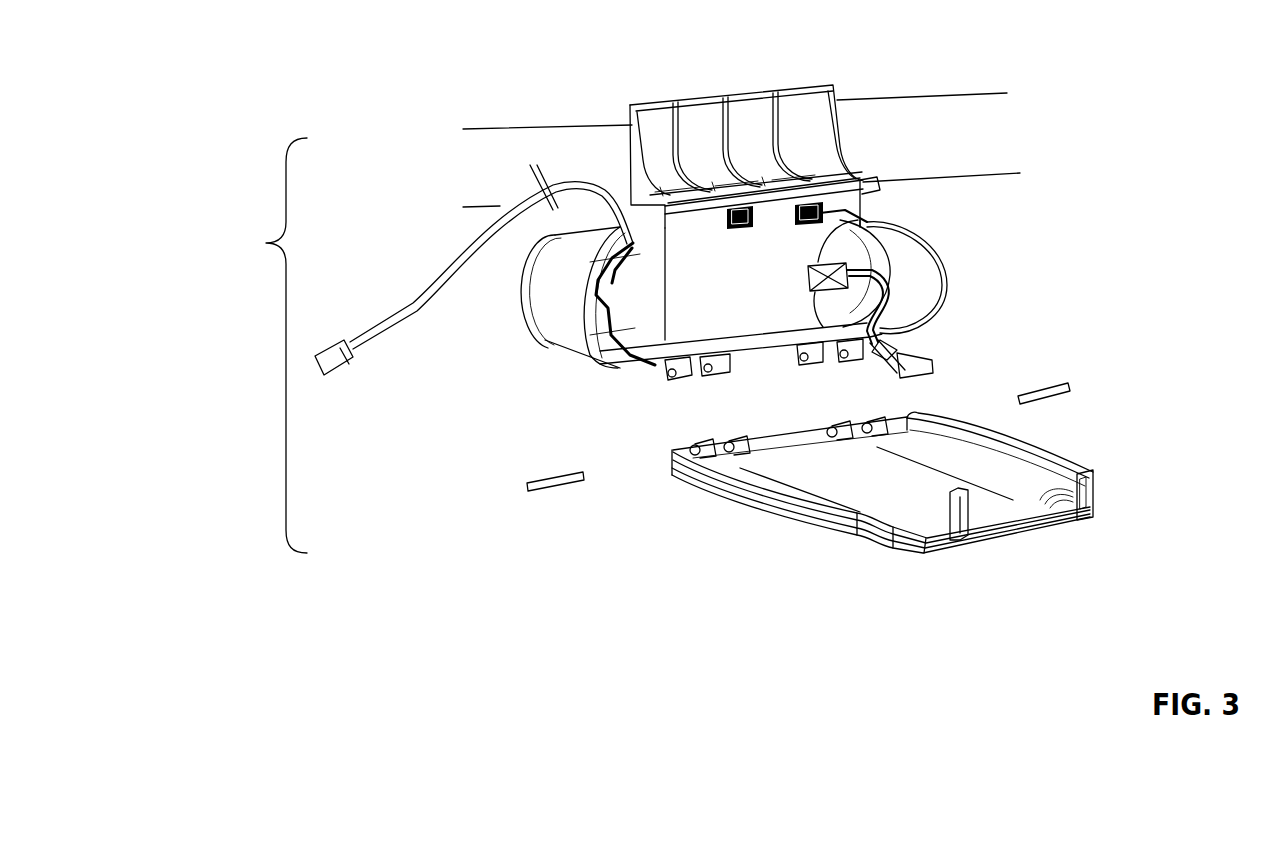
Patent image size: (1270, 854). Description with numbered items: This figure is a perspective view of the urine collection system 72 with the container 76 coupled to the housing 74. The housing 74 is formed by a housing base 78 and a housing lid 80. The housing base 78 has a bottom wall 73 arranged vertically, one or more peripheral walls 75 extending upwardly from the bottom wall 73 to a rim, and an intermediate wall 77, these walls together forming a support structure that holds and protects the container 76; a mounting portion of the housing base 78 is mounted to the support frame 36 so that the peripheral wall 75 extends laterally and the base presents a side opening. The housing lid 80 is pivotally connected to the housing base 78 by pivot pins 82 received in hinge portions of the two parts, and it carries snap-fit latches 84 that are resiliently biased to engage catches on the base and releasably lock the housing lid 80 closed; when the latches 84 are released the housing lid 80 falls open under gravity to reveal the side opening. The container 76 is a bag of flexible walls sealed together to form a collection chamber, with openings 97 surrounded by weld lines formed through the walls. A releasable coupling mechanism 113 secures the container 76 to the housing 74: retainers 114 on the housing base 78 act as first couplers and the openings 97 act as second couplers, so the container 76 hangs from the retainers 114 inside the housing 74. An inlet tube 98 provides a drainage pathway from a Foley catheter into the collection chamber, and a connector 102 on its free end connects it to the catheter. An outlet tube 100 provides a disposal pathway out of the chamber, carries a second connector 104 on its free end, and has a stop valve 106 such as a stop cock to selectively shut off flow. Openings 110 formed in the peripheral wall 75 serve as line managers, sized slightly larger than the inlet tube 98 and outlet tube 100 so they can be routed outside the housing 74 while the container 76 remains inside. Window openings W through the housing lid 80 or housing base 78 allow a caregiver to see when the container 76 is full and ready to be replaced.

The support frame 36 is at (493, 128).
The urine collection system 72 is at (267, 345).
The bottom wall 73 is at (847, 243).
The housing 74 is at (1113, 185).
The peripheral wall 75 is at (530, 287).
The container 76 is at (757, 327).
The intermediate wall 77 is at (775, 188).
The housing base 78 is at (862, 150).
The housing lid 80 is at (1095, 433).
The pivot pins 82 is at (1055, 383).
The snap-fit latches 84 is at (1087, 500).
The openings 97 is at (727, 223).
The inlet tube 98 is at (415, 305).
The outlet tube 100 is at (890, 360).
The connector 102 is at (335, 362).
The second connector 104 is at (933, 360).
The stop valve 106 is at (850, 276).
The openings 110 is at (630, 243).
The releasable coupling mechanism 113 is at (712, 232).
The retainers 114 is at (792, 230).
The window openings W is at (900, 462).